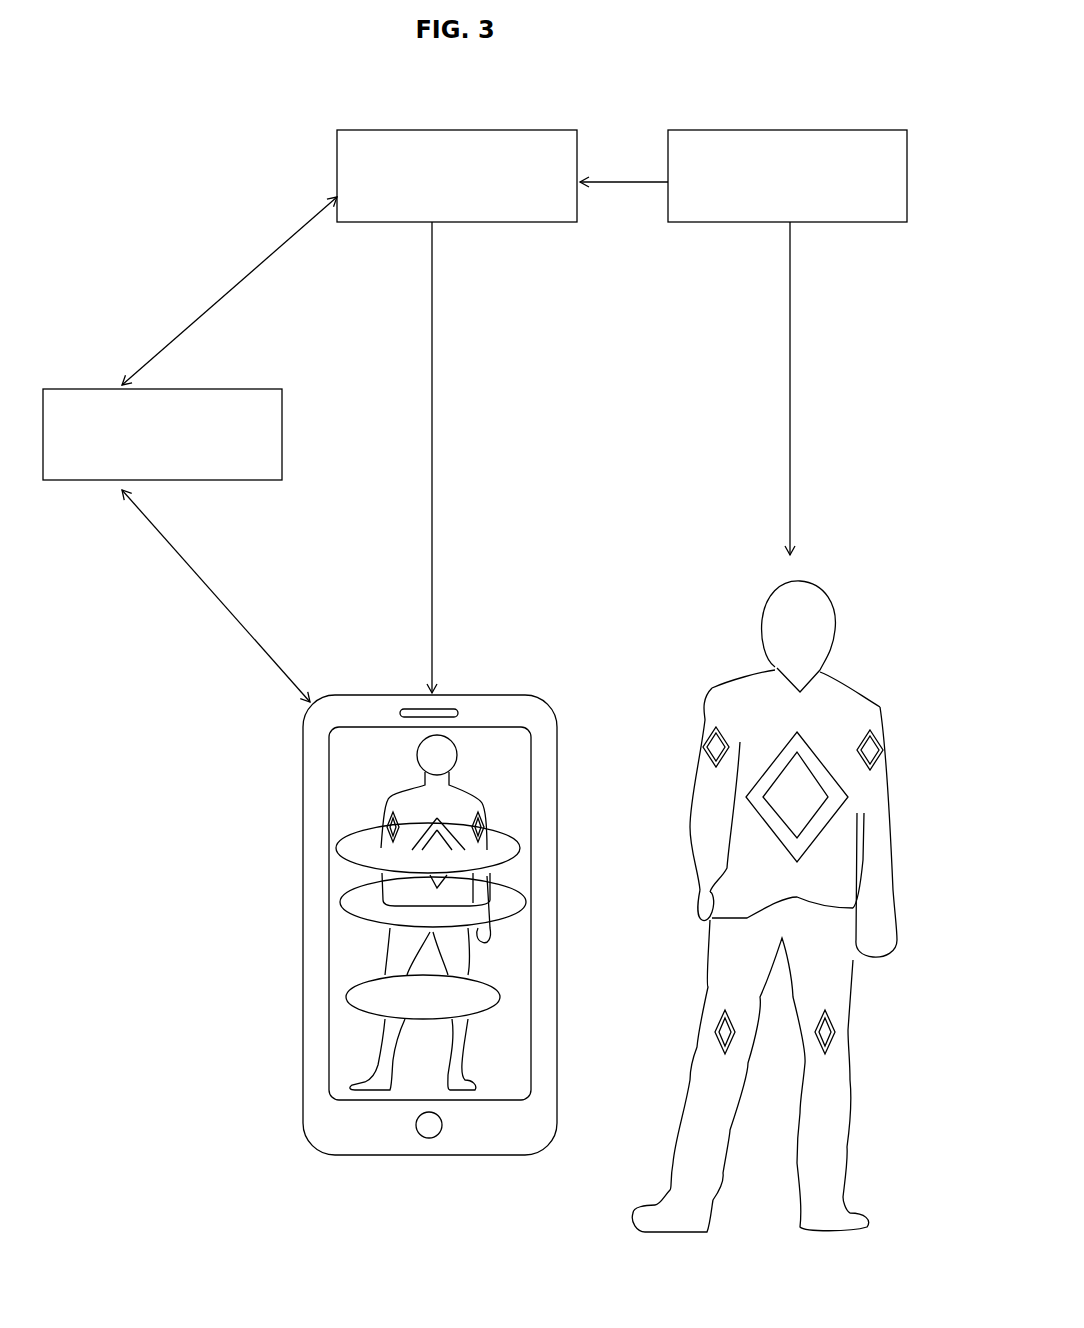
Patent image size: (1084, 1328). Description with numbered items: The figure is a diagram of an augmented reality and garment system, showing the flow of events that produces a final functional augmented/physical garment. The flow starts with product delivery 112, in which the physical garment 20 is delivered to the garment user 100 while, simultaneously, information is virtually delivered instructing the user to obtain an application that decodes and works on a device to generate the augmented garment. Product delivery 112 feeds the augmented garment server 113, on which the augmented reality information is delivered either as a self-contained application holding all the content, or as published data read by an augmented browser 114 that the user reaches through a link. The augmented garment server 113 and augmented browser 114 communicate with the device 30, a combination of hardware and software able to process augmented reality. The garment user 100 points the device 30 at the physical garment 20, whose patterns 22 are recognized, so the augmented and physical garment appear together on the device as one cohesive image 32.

The augmented garment server 113 is at (397, 130).
The product delivery 112 is at (752, 130).
The augmented browser 114 is at (240, 388).
The device 30 is at (303, 1068).
The cohesive image 32 is at (387, 788).
The garment user 100 is at (796, 865).
The physical garment 20 is at (742, 713).
The patterns 22 is at (840, 1032).